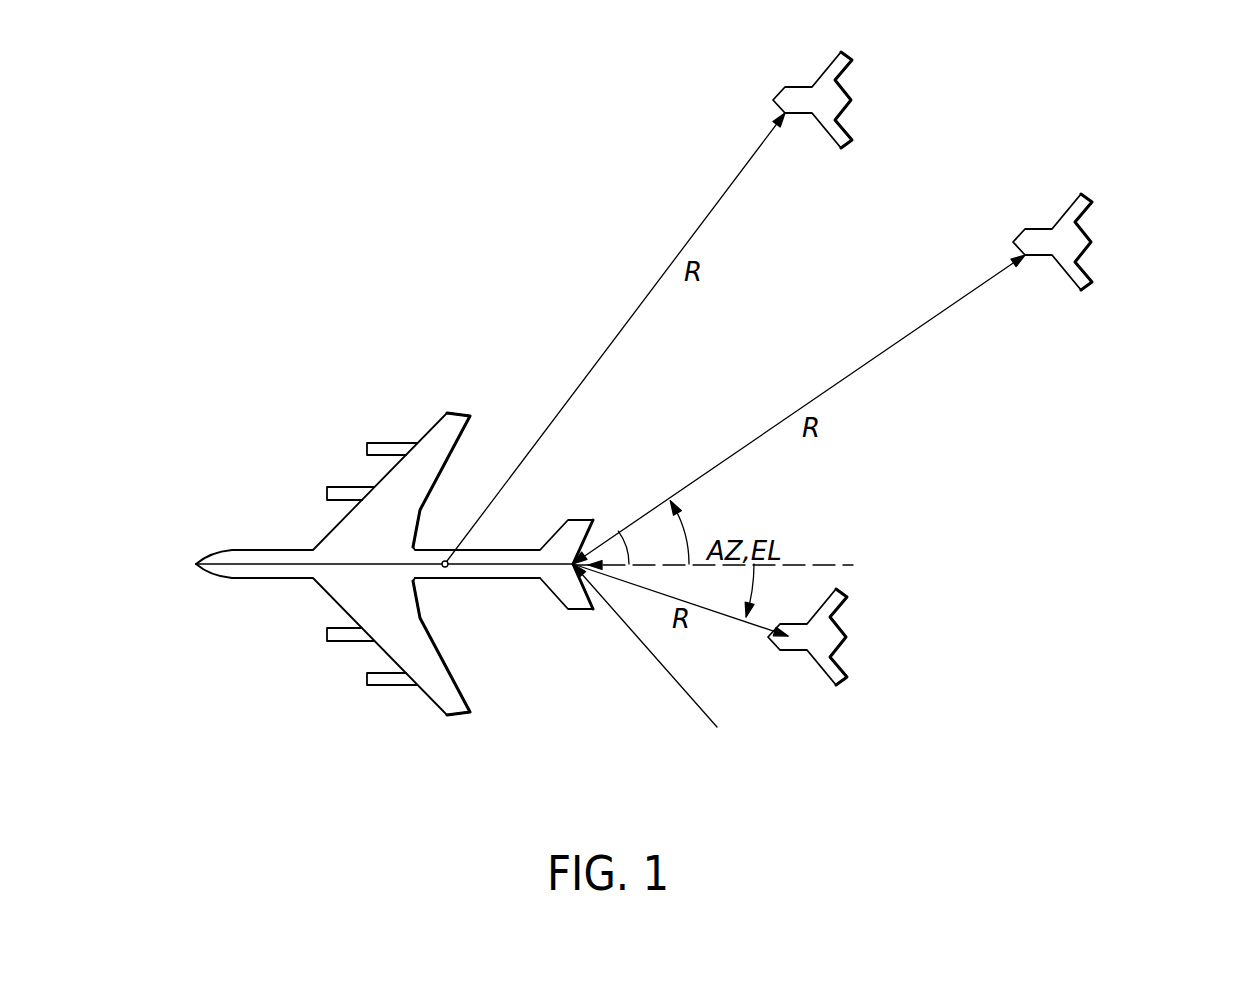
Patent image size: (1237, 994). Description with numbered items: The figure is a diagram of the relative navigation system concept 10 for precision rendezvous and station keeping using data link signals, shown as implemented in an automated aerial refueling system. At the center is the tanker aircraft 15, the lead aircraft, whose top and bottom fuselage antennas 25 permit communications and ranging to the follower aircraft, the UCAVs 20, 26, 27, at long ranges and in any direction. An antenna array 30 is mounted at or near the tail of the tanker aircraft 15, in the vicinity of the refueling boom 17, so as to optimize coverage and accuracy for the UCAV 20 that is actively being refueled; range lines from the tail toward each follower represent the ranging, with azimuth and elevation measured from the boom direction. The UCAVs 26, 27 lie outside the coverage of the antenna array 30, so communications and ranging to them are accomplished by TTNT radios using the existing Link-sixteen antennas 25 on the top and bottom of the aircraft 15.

The relative navigation system concept 10 is at (160, 474).
The tanker aircraft 15 is at (240, 549).
The refueling boom 17 is at (612, 533).
The UCAV 20 is at (846, 637).
The top and bottom fuselage antennas 25 is at (448, 571).
The UCAV 26 is at (1091, 242).
The UCAV 27 is at (851, 100).
The antenna array 30 is at (662, 659).